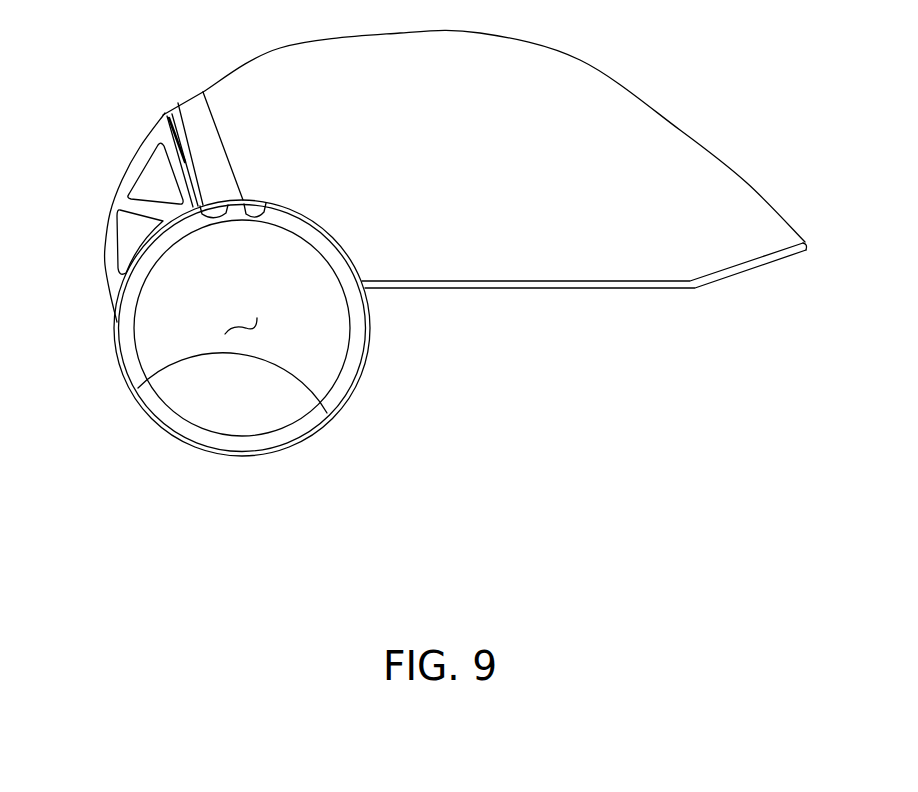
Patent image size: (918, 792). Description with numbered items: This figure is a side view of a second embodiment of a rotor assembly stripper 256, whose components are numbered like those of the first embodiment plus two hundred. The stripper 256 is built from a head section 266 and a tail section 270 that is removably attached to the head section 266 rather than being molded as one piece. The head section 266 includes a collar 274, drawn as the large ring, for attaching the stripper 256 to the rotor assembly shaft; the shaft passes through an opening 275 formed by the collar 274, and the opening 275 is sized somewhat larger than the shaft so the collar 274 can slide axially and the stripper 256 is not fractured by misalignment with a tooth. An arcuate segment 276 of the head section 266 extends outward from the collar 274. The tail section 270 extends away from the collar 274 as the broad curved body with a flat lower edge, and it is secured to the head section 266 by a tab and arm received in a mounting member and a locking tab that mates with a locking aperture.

The rotor assembly stripper 256 is at (474, 399).
The head section 266 is at (182, 438).
The tail section 270 is at (543, 289).
The collar 274 is at (323, 421).
The opening 275 is at (250, 332).
The arcuate segment 276 is at (123, 202).